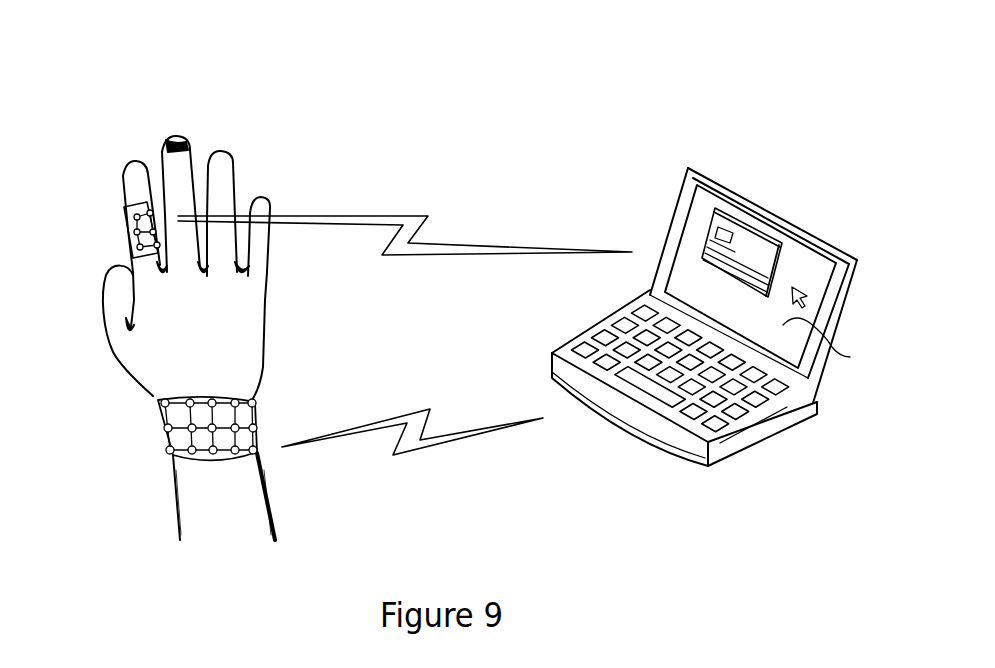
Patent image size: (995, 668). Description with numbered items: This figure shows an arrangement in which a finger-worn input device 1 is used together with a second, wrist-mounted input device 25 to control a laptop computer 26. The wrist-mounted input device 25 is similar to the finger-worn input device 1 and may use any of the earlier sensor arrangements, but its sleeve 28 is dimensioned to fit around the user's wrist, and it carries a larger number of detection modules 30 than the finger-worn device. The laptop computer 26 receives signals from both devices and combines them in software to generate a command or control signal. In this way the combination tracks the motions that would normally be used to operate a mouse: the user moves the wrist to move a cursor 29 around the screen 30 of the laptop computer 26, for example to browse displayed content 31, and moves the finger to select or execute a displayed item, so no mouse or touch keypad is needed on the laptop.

The input device 1 is at (100, 215).
The input device 25 is at (465, 389).
The laptop computer 26 is at (730, 239).
The sleeve 28 is at (227, 395).
The cursor 29 is at (806, 287).
The detection modules 30 is at (243, 421).
The displayed content 31 is at (759, 232).